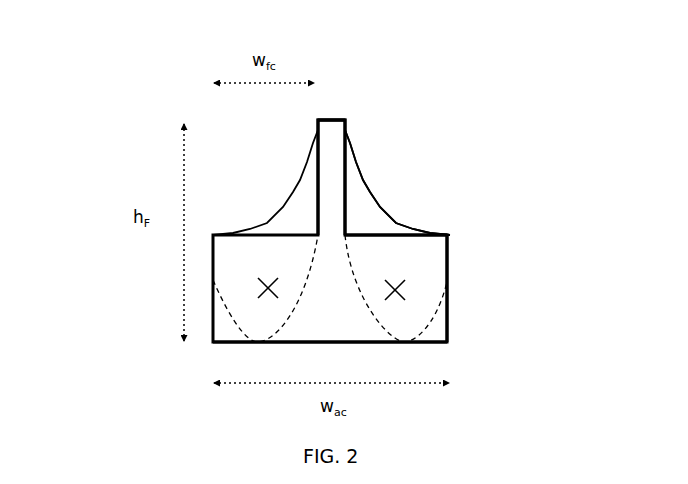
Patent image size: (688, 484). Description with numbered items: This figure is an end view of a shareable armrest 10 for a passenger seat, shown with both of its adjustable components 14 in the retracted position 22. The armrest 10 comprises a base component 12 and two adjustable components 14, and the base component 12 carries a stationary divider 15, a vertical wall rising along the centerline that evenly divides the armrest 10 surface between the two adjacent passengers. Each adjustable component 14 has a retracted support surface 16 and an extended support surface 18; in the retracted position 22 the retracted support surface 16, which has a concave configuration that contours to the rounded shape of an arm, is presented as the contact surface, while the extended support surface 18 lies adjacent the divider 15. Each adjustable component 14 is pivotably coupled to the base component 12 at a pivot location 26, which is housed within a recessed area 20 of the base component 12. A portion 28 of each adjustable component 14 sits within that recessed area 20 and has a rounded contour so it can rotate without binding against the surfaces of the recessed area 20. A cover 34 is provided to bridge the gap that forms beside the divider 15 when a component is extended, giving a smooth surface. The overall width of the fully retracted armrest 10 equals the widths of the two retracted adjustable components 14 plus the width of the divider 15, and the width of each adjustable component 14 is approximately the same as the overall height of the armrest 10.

The armrest 10 is at (502, 112).
The base component 12 is at (213, 345).
The adjustable component 14 is at (422, 258).
The stationary divider 15 is at (334, 142).
The retracted support surface 16 is at (373, 196).
The extended support surface 18 is at (346, 178).
The recessed area 20 is at (430, 333).
The retracted position 22 is at (124, 139).
The pivot location 26 is at (398, 292).
The portion 28 is at (427, 272).
The cover 34 is at (390, 235).